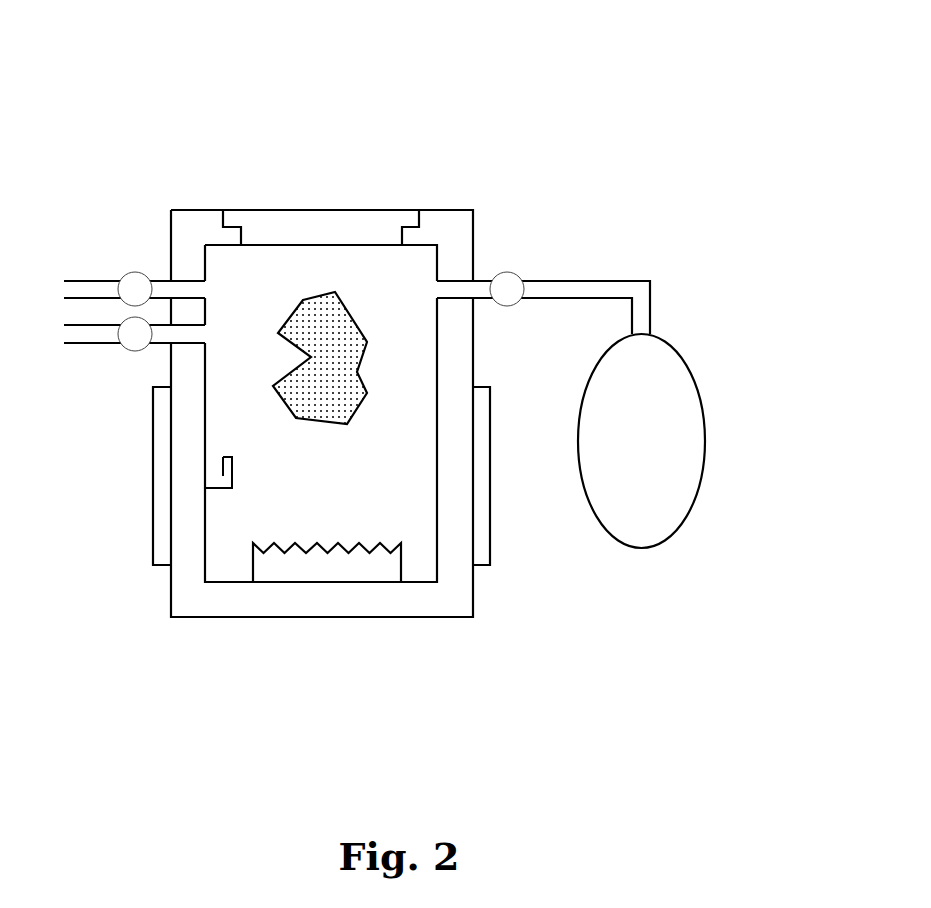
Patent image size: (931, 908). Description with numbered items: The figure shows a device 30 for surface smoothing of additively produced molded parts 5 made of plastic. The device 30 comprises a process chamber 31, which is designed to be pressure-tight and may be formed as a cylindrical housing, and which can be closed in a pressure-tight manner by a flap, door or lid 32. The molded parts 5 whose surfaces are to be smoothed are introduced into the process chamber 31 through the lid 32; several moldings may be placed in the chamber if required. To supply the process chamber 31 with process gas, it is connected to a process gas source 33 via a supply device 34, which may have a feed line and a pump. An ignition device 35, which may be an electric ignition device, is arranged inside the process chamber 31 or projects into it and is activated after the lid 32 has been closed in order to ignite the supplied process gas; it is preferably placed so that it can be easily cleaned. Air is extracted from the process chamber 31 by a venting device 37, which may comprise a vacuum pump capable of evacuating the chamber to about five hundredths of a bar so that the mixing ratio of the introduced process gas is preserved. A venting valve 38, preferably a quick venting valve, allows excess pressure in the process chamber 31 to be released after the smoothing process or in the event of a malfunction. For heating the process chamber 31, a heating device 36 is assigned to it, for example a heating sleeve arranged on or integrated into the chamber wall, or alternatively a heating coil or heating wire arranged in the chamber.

The device 30 is at (566, 108).
The process chamber 31 is at (403, 285).
The lid 32 is at (348, 208).
The process gas source 33 is at (660, 502).
The supply device 34 is at (520, 268).
The ignition device 35 is at (207, 477).
The heating device 36 is at (343, 553).
The venting device 37 is at (122, 353).
The venting valve 38 is at (122, 267).
The molded parts 5 is at (303, 300).